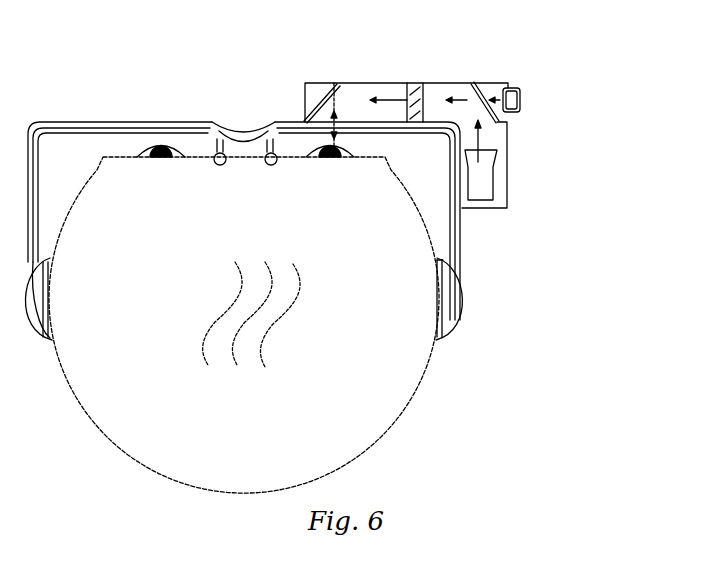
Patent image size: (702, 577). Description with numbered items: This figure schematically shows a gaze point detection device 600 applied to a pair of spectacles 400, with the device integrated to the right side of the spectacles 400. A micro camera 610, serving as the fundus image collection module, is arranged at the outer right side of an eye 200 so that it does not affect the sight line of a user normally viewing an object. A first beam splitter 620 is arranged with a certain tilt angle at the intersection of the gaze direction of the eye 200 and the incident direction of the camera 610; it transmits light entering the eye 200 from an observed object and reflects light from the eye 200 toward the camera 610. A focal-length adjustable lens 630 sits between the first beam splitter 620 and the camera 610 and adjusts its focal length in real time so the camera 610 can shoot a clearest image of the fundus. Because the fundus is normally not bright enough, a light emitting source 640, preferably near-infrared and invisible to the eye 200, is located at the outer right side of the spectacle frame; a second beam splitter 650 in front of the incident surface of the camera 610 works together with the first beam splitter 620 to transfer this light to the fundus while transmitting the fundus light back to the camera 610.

The eye 200 is at (312, 152).
The spectacles 400 is at (118, 120).
The gaze point detection device 600 is at (546, 110).
The micro camera 610 is at (519, 88).
The first beam splitter 620 is at (340, 84).
The focal-length adjustable lens 630 is at (418, 82).
The light emitting source 640 is at (482, 188).
The second beam splitter 650 is at (473, 82).